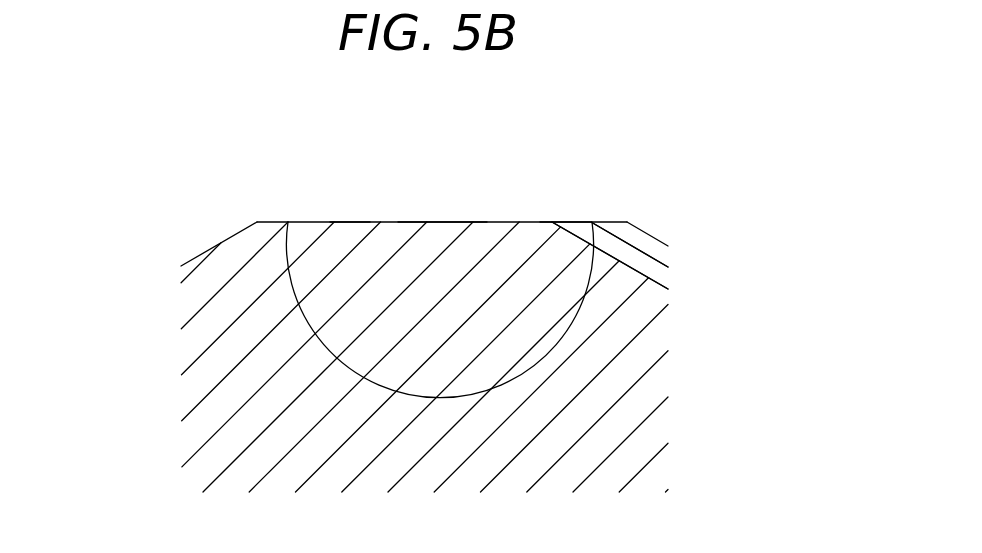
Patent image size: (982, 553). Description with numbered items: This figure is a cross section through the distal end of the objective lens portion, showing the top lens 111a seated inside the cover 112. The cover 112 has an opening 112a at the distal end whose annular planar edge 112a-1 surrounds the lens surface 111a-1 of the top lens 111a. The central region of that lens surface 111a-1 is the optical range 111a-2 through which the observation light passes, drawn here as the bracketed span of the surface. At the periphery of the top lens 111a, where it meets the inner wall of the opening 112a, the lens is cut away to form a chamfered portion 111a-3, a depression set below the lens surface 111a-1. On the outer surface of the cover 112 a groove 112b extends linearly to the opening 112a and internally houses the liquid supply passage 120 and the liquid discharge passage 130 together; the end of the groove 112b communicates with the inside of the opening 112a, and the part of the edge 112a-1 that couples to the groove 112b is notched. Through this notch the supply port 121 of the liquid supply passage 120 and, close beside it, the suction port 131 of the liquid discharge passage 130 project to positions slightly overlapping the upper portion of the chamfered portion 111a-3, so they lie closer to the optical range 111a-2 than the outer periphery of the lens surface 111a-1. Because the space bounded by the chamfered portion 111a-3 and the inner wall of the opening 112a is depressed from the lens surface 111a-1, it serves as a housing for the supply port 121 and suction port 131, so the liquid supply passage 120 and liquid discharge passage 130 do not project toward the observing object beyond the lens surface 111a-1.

The cover 112 is at (223, 246).
The opening 112a is at (320, 222).
The edge 112a-1 is at (272, 222).
The groove 112b is at (640, 231).
The top lens 111a is at (355, 318).
The lens surface 111a-1 is at (353, 222).
The optical range 111a-2 is at (487, 228).
The chamfered portion 111a-3 is at (567, 222).
The liquid supply passage 120 is at (690, 249).
The liquid discharge passage 130 is at (657, 242).
The supply port 121 is at (657, 188).
The suction port 131 is at (580, 228).